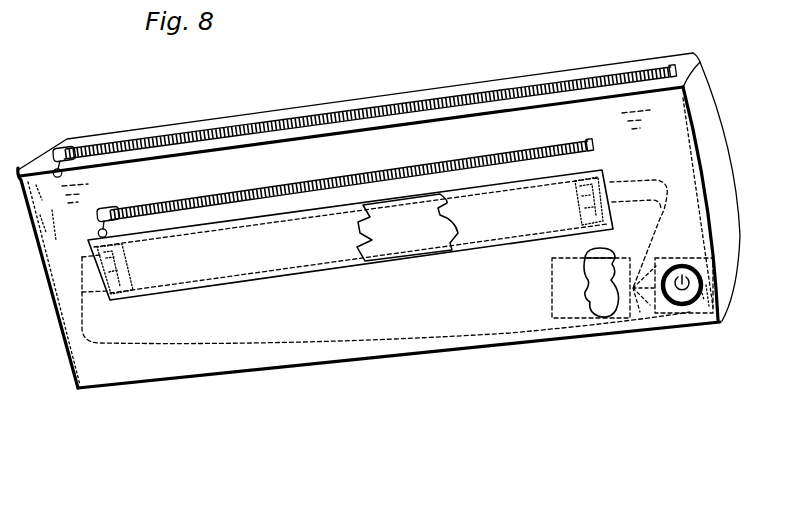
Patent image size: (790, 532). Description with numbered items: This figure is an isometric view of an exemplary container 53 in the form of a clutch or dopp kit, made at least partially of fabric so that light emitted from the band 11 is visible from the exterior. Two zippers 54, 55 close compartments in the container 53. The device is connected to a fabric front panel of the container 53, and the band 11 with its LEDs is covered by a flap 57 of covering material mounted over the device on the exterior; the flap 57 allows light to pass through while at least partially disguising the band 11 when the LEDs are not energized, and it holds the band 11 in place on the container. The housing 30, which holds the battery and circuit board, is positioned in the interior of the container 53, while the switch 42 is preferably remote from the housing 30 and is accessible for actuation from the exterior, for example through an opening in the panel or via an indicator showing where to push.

The container 53 is at (110, 414).
The zipper 54 is at (94, 150).
The zipper 55 is at (143, 208).
The flap 57 is at (202, 248).
The band 11 is at (402, 233).
The housing 30 is at (600, 298).
The switch 42 is at (682, 298).